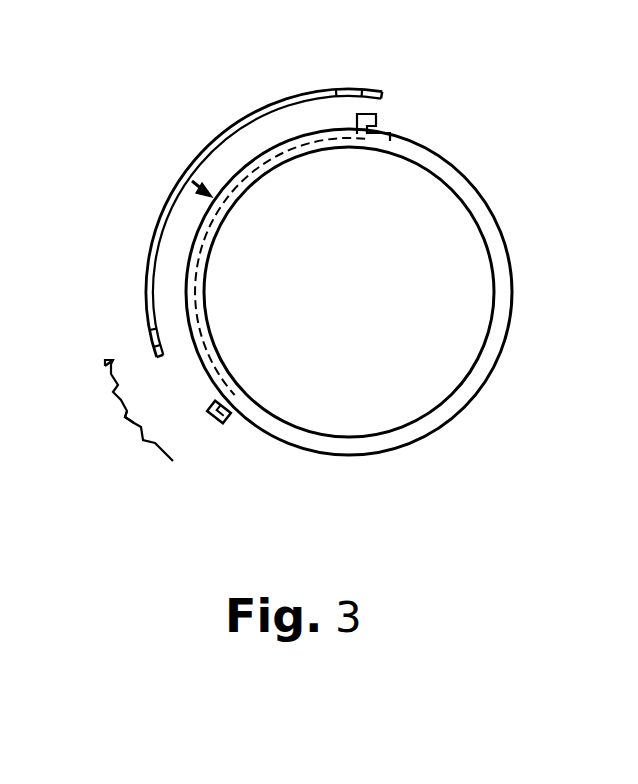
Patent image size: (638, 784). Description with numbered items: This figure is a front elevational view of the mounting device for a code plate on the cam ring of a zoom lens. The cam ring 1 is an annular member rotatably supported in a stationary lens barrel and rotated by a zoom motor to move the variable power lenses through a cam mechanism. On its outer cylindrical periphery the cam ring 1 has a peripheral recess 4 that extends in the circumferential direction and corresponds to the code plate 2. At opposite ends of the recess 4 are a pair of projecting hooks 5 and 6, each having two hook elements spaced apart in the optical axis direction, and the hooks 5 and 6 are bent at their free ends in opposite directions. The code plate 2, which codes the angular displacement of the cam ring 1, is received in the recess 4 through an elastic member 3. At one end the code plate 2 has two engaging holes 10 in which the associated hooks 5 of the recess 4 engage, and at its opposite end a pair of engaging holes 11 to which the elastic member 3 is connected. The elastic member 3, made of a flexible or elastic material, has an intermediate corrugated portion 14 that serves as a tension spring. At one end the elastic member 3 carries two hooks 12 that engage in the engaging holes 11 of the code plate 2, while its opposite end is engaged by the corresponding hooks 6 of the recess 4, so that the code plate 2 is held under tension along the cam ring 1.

The cam ring 1 is at (482, 194).
The code plate 2 is at (245, 113).
The elastic member 3 is at (121, 413).
The peripheral recess 4 is at (185, 302).
The projecting hook 5 is at (391, 118).
The projecting hook 6 is at (219, 424).
The engaging holes 10 is at (352, 88).
The engaging holes 11 is at (151, 342).
The hooks 12 is at (107, 367).
The intermediate corrugated portion 14 is at (132, 421).